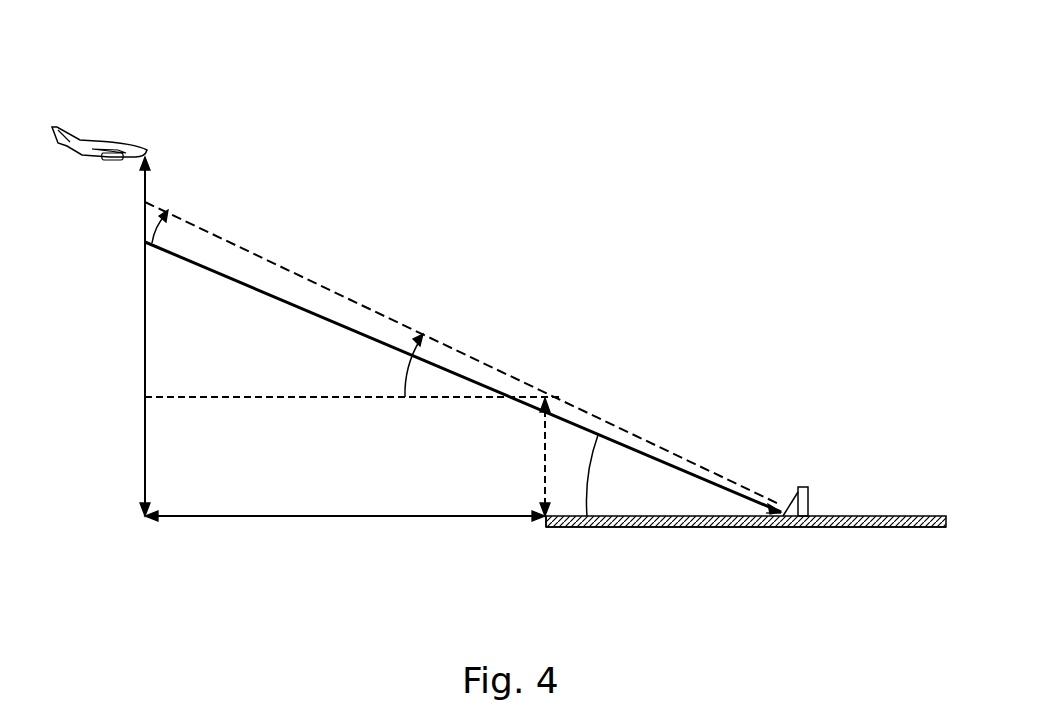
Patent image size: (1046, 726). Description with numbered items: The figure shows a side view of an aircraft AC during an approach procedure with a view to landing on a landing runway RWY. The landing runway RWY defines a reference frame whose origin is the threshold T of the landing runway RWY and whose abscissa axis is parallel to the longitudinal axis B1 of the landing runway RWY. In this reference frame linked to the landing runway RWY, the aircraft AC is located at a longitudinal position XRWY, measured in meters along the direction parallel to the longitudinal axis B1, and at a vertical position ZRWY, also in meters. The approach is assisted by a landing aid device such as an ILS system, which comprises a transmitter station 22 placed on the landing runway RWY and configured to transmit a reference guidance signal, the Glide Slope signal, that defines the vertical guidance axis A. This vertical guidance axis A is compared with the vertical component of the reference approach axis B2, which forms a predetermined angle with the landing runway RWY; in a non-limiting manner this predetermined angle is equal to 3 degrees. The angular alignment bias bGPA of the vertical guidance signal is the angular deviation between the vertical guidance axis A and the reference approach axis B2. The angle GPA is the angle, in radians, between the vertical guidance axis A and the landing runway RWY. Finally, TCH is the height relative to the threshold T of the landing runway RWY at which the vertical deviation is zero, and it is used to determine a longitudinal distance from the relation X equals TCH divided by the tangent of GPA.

The aircraft AC is at (118, 142).
The reference guidance axis A is at (290, 268).
The vertical component of the reference approach axis B2 is at (232, 277).
The angular alignment bias of the vertical guidance signal bGPA is at (178, 233).
The angle between vertical guidance axis and landing runway GPA is at (388, 365).
The height at which the vertical deviation is zero TCH is at (520, 457).
The predetermined angle 3 is at (600, 475).
The vertical position of the aircraft ZRWY is at (112, 336).
The longitudinal position of the aircraft XRWY is at (345, 533).
The threshold of the landing runway T is at (548, 527).
The transmitter station 22 is at (800, 487).
The landing runway RWY is at (890, 516).
The longitudinal axis of the landing runway B1 is at (873, 527).